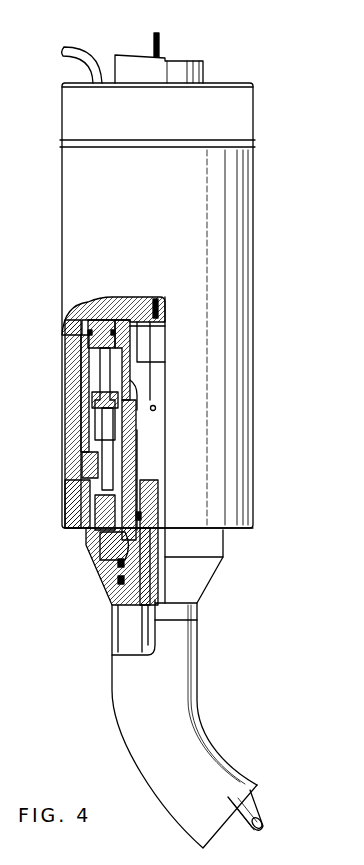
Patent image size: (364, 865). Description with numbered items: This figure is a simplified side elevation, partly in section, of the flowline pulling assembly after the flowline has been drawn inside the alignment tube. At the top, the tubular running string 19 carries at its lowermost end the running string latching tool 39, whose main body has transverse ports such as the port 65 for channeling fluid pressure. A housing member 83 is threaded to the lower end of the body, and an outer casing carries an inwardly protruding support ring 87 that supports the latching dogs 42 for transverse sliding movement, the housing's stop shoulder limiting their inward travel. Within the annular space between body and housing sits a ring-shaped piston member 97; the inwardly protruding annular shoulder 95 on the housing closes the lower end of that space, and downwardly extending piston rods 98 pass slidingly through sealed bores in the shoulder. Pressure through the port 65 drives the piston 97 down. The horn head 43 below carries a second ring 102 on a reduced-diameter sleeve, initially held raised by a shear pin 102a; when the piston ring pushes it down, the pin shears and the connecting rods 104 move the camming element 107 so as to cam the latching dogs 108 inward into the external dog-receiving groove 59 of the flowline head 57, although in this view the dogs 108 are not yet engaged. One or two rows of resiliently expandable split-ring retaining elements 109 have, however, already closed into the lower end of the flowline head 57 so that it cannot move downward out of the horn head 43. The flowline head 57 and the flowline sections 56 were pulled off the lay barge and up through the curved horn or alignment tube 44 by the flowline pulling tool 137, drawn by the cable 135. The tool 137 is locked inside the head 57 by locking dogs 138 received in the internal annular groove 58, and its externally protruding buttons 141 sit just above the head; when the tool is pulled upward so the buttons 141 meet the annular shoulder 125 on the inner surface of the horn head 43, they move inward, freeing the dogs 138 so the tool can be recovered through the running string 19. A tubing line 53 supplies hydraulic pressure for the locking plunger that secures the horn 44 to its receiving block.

The running string 19 is at (205, 66).
The running string latching tool 39 is at (260, 200).
The latching dogs 42 is at (88, 462).
The horn head 43 is at (203, 540).
The curved horn or alignment tube 44 is at (198, 644).
The tubing line 53 is at (80, 47).
The flowline sections 56 is at (255, 808).
The flowline head 57 is at (152, 573).
The annular groove 58 is at (141, 516).
The dog-receiving recess or groove 59 is at (150, 540).
The port 65 is at (105, 299).
The housing member 83 is at (88, 364).
The support ring 87 is at (75, 492).
The annular shoulder 95 is at (95, 387).
The ring-shaped piston member 97 is at (95, 332).
The piston rods 98 is at (80, 350).
The second ring 102 is at (98, 410).
The shear pin 102a is at (137, 392).
The connecting rods 104 is at (105, 432).
The camming element 107 is at (105, 512).
The latching dogs 108 is at (110, 546).
The split-ring retaining elements 109 is at (118, 580).
The annular shoulder 125 is at (140, 404).
The cable or drawline 135 is at (160, 42).
The flowline pulling tool 137 is at (155, 452).
The locking dogs 138 is at (150, 495).
The buttons 141 is at (156, 411).